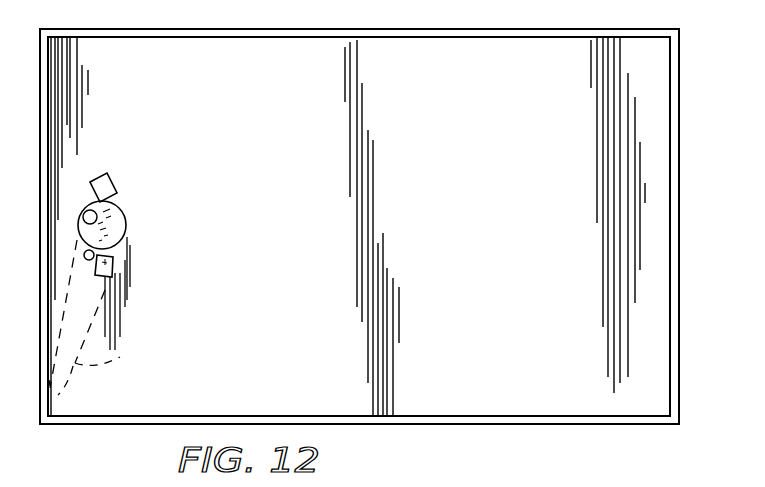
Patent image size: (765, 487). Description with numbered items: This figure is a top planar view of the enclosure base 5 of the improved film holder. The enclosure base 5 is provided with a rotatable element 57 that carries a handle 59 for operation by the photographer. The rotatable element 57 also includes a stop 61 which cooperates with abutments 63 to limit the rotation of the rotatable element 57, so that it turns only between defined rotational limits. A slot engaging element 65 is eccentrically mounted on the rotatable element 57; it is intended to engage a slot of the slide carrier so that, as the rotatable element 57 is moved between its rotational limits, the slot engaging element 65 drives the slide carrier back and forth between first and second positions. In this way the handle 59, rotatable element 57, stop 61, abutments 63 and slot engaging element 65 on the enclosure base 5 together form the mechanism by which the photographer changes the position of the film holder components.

The enclosure base 5 is at (679, 242).
The rotatable element 57 is at (123, 228).
The handle 59 is at (97, 317).
The stop 61 is at (84, 256).
The abutments 63 is at (108, 183).
The slot engaging element 65 is at (95, 212).